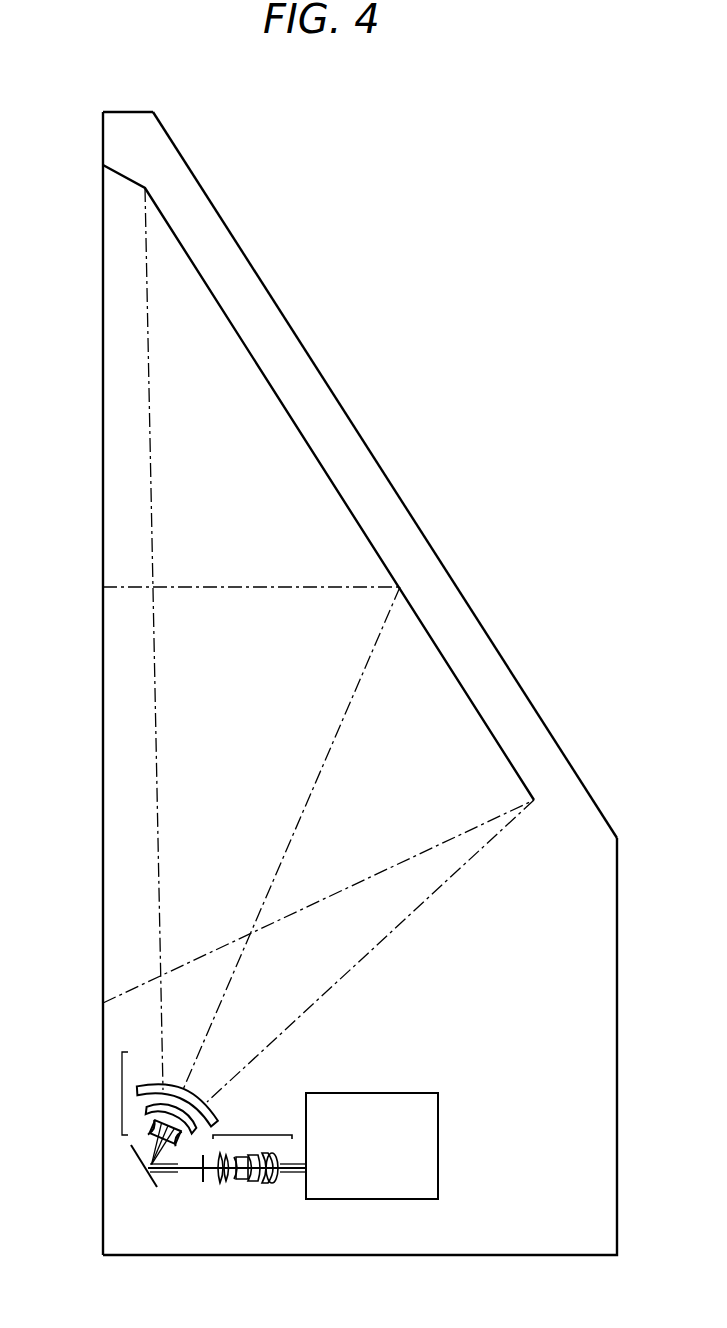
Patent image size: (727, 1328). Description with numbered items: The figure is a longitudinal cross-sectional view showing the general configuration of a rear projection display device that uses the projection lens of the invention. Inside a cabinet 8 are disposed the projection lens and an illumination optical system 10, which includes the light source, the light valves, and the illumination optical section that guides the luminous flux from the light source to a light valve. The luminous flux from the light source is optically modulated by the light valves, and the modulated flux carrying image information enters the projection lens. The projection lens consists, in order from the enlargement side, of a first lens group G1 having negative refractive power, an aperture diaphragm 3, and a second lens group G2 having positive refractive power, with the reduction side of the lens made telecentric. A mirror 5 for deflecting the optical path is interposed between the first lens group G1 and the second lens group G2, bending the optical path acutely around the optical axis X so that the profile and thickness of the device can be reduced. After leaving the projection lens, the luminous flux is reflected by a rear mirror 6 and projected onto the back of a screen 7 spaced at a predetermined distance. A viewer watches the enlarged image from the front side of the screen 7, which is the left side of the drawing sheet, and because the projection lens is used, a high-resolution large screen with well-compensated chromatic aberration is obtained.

The aperture diaphragm 3 is at (201, 1180).
The mirror 5 is at (131, 1152).
The rear mirror 6 is at (300, 428).
The screen 7 is at (103, 673).
The cabinet 8 is at (550, 730).
The illumination optical system 10 is at (400, 1093).
The first lens group G1 is at (122, 1097).
The second lens group G2 is at (252, 1146).
The optical axis X is at (300, 815).